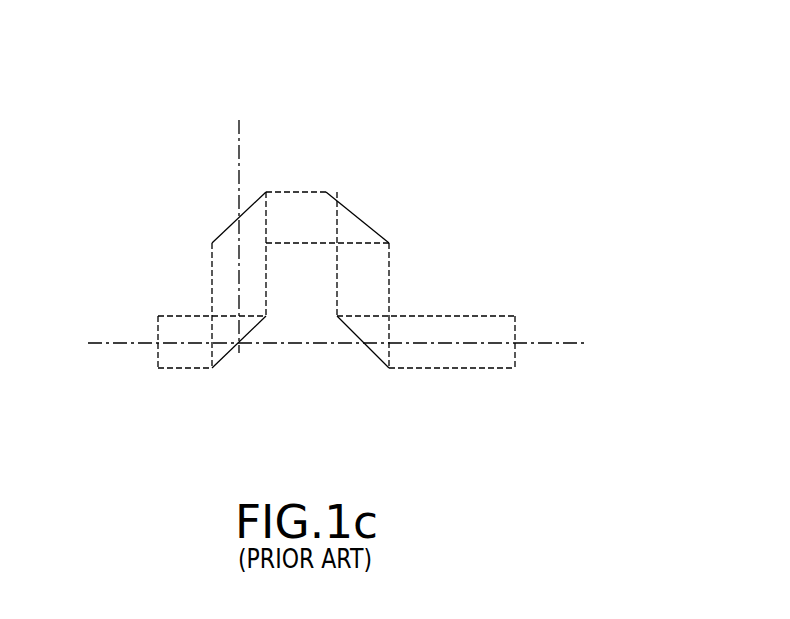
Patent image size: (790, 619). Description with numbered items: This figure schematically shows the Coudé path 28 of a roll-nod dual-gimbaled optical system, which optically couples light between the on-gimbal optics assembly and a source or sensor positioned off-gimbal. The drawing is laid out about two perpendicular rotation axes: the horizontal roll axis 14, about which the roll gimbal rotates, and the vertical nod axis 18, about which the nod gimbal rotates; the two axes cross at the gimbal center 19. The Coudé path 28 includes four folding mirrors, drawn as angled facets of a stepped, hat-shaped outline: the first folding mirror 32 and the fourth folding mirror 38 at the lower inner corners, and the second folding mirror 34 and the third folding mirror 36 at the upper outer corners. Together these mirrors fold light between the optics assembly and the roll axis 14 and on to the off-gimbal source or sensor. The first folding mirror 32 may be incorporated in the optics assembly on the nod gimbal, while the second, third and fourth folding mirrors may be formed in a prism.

The Coudé path 28 is at (126, 96).
The second folding mirror 34 is at (223, 233).
The third folding mirror 36 is at (362, 217).
The first folding mirror 32 is at (258, 319).
The fourth folding mirror 38 is at (362, 340).
The gimbal center 19 is at (231, 375).
The nod axis 18 is at (239, 128).
The roll axis 14 is at (627, 363).